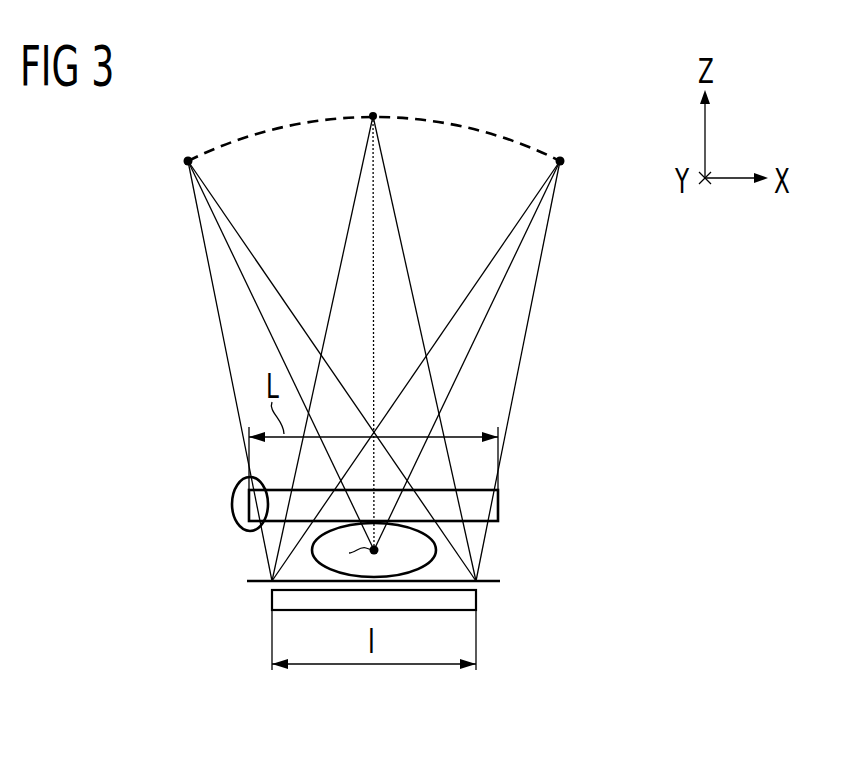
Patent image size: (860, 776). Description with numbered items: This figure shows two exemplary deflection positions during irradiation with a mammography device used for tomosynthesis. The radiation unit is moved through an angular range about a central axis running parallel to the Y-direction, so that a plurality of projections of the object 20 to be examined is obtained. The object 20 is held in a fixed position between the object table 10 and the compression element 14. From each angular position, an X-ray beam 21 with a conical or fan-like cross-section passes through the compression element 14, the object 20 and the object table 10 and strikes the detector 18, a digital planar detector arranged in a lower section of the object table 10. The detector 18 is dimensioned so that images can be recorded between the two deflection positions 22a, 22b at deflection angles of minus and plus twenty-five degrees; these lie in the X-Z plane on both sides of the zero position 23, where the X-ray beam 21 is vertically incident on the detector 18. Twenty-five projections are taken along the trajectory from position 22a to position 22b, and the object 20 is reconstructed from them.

The object table 10 is at (490, 583).
The compression element 14 is at (499, 505).
The detector 18 is at (270, 598).
The object to be examined 20 is at (437, 546).
The X-ray beam 21 is at (392, 243).
The deflection position 22a is at (186, 162).
The deflection position 22b is at (563, 162).
The zero position 23 is at (375, 114).